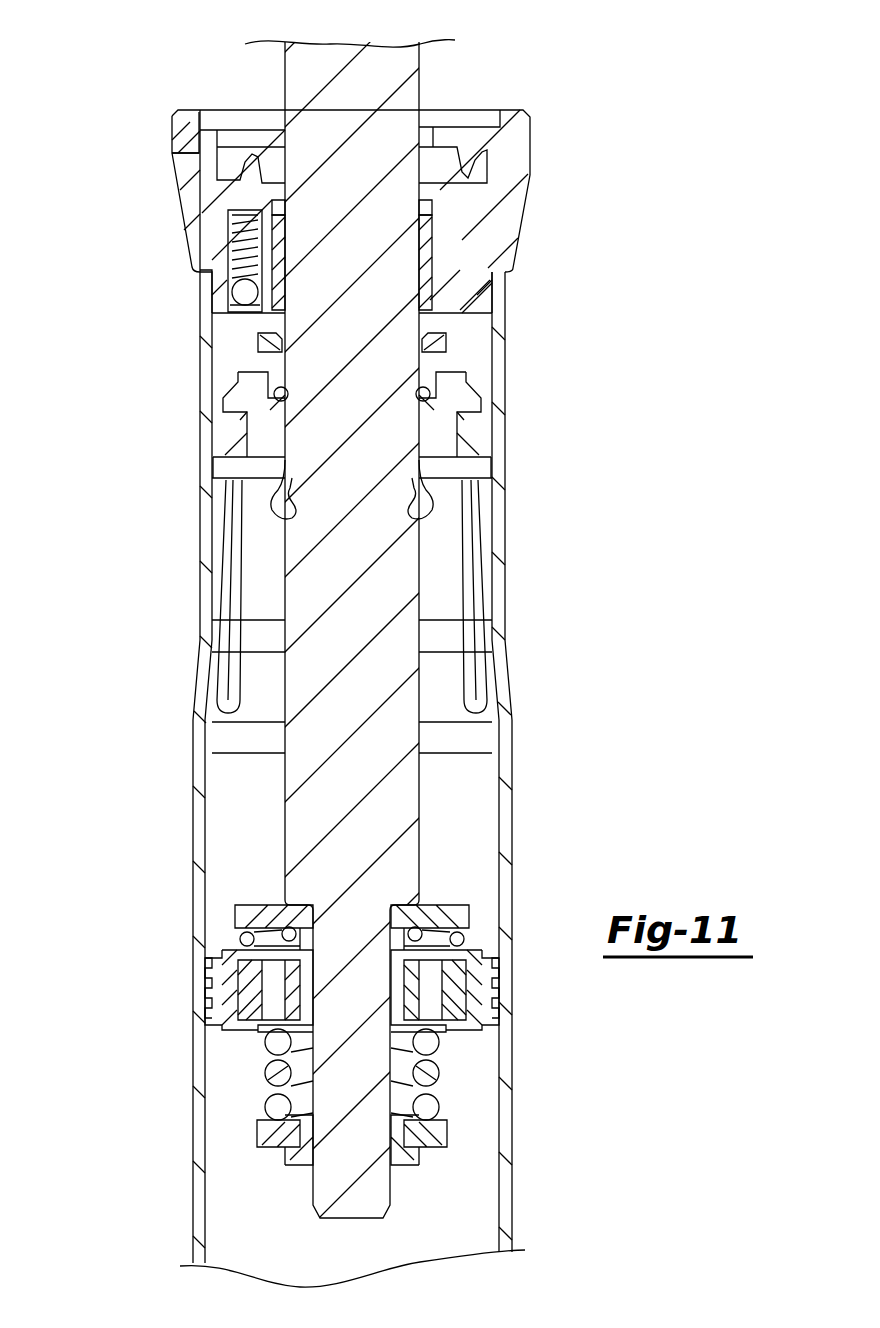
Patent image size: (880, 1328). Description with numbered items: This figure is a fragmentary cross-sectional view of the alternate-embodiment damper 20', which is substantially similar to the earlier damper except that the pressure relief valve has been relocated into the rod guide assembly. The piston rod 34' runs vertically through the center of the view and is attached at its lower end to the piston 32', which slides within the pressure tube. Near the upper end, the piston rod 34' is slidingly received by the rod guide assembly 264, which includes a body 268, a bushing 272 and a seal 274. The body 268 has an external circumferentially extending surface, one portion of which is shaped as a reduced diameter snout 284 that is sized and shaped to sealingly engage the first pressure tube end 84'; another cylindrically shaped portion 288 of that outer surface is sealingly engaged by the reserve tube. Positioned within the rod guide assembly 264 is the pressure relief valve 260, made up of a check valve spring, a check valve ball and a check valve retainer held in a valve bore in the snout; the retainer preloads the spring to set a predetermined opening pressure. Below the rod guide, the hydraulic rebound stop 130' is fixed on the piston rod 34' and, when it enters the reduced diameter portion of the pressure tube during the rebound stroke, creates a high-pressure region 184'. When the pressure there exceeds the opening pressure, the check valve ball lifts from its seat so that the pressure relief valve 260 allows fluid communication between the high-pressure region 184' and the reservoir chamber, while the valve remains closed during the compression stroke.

The damper 20' is at (726, 66).
The piston 32' is at (282, 1035).
The piston rod 34' is at (440, 664).
The first pressure tube end 84' is at (557, 762).
The hydraulic rebound stop 130' is at (448, 536).
The high-pressure region 184' is at (330, 347).
The pressure relief valve 260 is at (212, 292).
The rod guide assembly 264 is at (520, 153).
The body 268 is at (481, 200).
The bushing 272 is at (429, 258).
The seal 274 is at (428, 210).
The snout 284 is at (489, 298).
The cylindrically shaped portion 288 is at (173, 130).